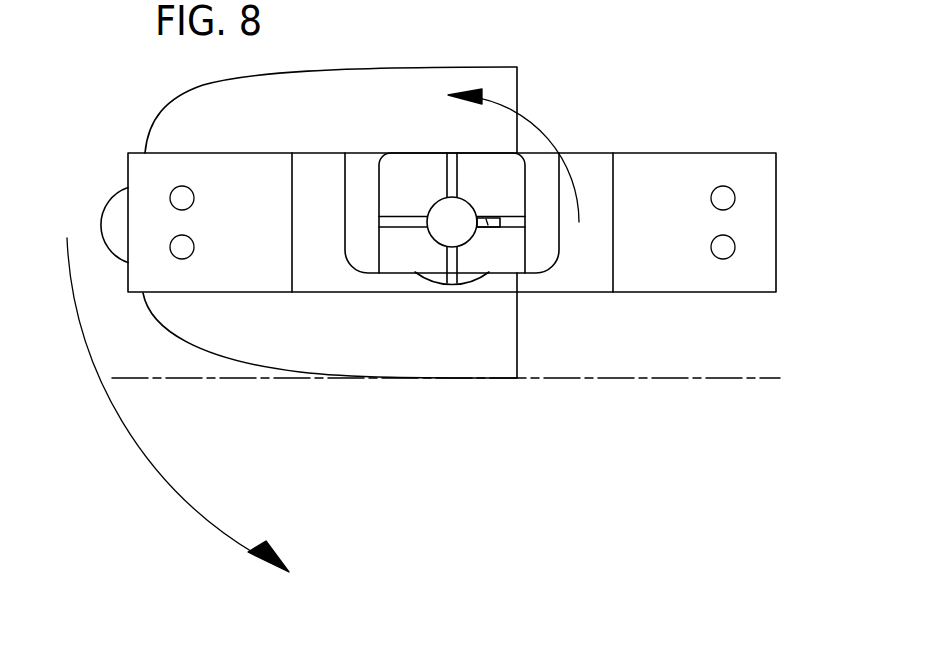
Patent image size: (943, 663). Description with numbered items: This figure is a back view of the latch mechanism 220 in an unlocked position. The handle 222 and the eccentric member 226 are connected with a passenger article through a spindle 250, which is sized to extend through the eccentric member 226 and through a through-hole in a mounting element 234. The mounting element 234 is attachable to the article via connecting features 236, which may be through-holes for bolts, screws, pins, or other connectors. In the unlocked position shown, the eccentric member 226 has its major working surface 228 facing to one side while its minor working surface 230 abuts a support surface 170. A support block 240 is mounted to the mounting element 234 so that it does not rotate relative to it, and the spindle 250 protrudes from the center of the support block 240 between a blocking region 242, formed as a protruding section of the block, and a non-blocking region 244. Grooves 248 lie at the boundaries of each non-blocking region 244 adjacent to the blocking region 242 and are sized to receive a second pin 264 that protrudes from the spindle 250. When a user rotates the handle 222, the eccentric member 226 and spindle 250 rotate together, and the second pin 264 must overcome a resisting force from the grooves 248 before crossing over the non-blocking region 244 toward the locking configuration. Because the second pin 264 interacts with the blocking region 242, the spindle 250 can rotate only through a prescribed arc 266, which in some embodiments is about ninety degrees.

The support surface 170 is at (687, 378).
The latch mechanism 220 is at (610, 102).
The handle 222 is at (113, 218).
The eccentric member 226 is at (286, 333).
The major working surface 228 is at (143, 297).
The minor working surface 230 is at (466, 380).
The mounting element 234 is at (635, 168).
The connecting features 236 is at (730, 248).
The support block 240 is at (377, 168).
The blocking region 242 is at (412, 175).
The non-blocking region 244 is at (502, 188).
The grooves 248 is at (446, 185).
The spindle 250 is at (447, 226).
The second pin 264 is at (494, 228).
The prescribed arc 266 is at (540, 123).